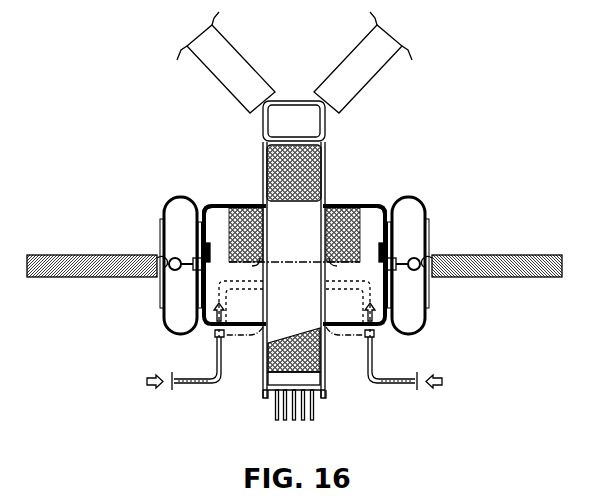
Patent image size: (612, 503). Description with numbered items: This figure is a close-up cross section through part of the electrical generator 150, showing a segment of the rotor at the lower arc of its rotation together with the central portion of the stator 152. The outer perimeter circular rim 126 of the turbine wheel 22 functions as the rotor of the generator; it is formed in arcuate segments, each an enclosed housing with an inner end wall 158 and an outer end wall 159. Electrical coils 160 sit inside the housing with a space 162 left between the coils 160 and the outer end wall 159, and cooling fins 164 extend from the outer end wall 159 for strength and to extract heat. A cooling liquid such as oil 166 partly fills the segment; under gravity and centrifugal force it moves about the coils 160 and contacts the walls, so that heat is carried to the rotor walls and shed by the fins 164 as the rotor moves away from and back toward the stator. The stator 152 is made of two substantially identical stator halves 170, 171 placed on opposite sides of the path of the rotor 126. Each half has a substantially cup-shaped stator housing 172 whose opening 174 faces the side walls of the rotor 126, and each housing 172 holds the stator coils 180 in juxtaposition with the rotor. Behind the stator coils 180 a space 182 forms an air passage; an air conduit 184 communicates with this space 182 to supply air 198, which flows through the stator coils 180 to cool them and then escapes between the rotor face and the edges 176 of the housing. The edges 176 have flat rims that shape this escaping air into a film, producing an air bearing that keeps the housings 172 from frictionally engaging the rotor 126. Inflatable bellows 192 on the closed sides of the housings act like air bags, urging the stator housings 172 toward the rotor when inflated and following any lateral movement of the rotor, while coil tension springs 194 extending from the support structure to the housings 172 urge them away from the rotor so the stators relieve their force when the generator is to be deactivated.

The turbine wheel 22 is at (372, 75).
The electrical generator 150 is at (239, 134).
The inner end wall 158 is at (300, 145).
The cooling liquid (oil) 166 is at (322, 148).
The coils 160 is at (295, 201).
The stator half 170 is at (233, 203).
The stator half 171 is at (346, 203).
The stator 152 is at (366, 203).
The cup-shaped stator housing 172 is at (210, 202).
The edges of stator housing 176 is at (264, 202).
The opening of stator housing 174 is at (304, 263).
The outer perimeter circular rim (rotor) 126 is at (303, 285).
The space (air passage) 182 is at (230, 258).
The stator coils 180 is at (297, 268).
The inflatable bellows 192 is at (178, 196).
The coil tension spring 194 is at (137, 254).
The air conduit 184 is at (190, 384).
The air (air source) 198 is at (160, 380).
The outer end wall 159 is at (286, 386).
The space 162 is at (305, 380).
The cooling fins 164 is at (300, 420).